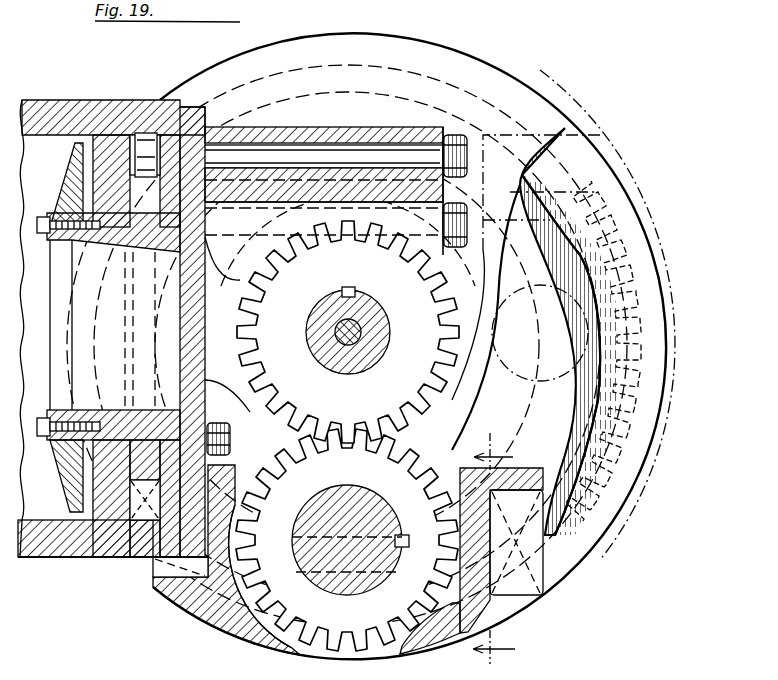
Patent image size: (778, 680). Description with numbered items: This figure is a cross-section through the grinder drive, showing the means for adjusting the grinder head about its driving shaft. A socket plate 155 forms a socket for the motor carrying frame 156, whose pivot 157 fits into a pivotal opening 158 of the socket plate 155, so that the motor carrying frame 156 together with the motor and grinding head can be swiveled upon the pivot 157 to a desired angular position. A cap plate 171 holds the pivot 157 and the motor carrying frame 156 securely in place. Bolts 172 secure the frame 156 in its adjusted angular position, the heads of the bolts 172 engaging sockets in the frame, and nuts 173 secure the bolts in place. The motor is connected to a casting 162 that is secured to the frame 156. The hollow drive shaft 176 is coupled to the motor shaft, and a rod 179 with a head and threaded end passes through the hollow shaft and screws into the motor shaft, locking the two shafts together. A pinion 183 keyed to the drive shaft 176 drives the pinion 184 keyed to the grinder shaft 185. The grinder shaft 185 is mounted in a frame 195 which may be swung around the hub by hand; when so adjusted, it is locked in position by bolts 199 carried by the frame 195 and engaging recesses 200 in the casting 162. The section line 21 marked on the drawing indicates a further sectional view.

The section line 21 is at (494, 547).
The socket plate 155 is at (72, 547).
The motor carrying frame 156 is at (262, 233).
The pivot 157 is at (134, 276).
The pivotal opening 158 is at (73, 498).
The casting 162 is at (604, 150).
The cap plate 171 is at (76, 174).
The bolts 172 is at (318, 150).
The nuts 173 is at (463, 147).
The drive shaft 176 is at (310, 332).
The rod 179 is at (349, 346).
The pinion 183 is at (348, 295).
The pinion 184 is at (422, 476).
The grinder shaft 185 is at (363, 578).
The frame 195 is at (224, 632).
The bolts 199 is at (547, 575).
The recesses 200 is at (622, 480).